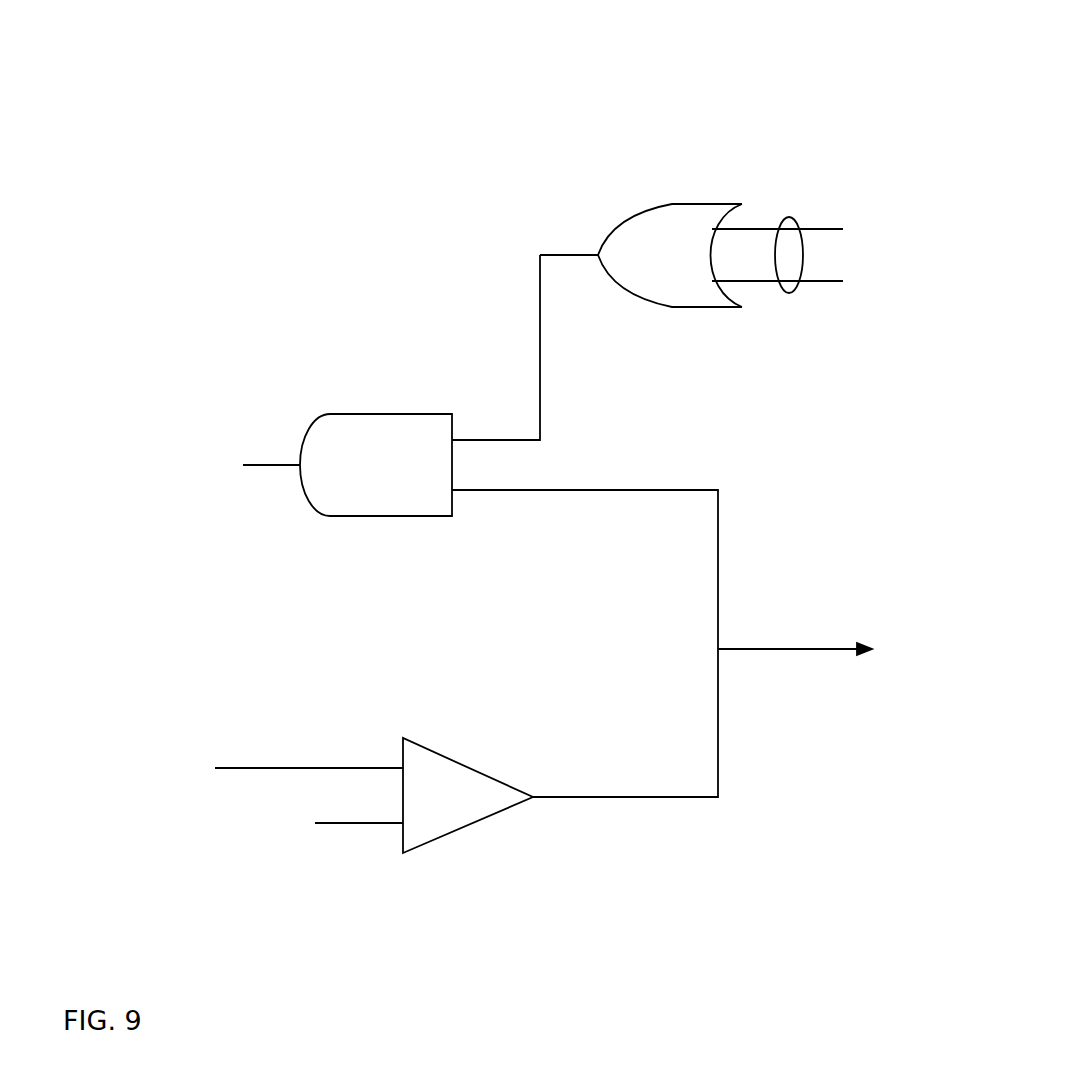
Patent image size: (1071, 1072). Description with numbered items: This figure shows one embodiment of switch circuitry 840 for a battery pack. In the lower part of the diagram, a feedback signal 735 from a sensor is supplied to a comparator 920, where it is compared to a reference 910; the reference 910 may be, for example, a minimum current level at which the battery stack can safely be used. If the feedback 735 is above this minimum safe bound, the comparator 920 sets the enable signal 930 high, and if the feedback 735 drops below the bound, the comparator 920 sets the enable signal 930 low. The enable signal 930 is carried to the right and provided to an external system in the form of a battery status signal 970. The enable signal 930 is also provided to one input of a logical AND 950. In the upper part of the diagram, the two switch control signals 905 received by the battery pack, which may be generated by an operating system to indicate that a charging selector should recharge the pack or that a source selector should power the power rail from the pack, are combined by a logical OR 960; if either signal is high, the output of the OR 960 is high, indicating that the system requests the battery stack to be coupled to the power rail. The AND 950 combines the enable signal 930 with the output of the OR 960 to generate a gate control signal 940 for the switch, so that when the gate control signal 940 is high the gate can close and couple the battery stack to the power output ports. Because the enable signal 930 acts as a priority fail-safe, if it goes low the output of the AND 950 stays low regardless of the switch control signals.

The switch circuitry 840 is at (552, 48).
The logical OR 960 is at (645, 237).
The switch control signal 905 is at (783, 222).
The logical AND 950 is at (390, 498).
The gate control signal 940 is at (277, 465).
The enable signal 930 is at (686, 797).
The battery status signal 970 is at (804, 649).
The comparator 920 is at (428, 826).
The feedback signal 735 is at (270, 767).
The reference 910 is at (343, 826).